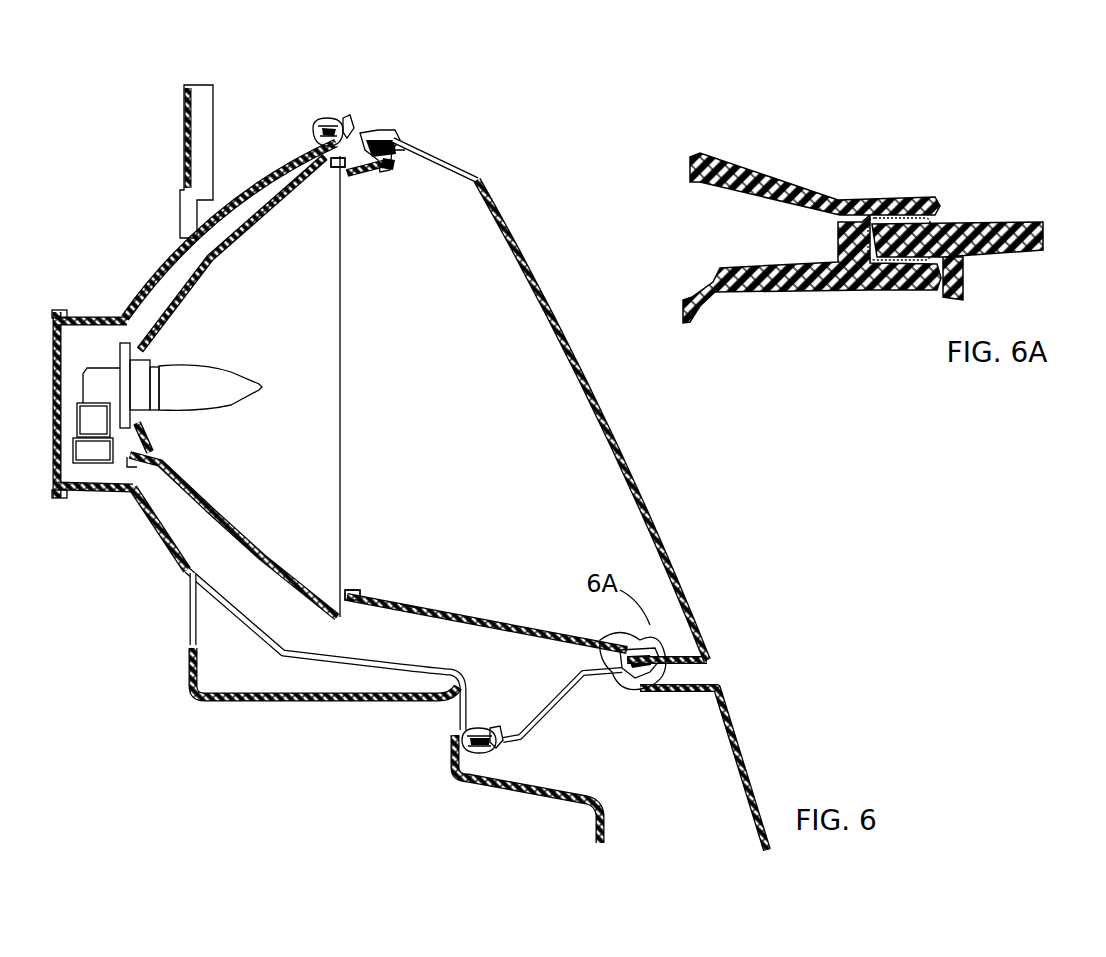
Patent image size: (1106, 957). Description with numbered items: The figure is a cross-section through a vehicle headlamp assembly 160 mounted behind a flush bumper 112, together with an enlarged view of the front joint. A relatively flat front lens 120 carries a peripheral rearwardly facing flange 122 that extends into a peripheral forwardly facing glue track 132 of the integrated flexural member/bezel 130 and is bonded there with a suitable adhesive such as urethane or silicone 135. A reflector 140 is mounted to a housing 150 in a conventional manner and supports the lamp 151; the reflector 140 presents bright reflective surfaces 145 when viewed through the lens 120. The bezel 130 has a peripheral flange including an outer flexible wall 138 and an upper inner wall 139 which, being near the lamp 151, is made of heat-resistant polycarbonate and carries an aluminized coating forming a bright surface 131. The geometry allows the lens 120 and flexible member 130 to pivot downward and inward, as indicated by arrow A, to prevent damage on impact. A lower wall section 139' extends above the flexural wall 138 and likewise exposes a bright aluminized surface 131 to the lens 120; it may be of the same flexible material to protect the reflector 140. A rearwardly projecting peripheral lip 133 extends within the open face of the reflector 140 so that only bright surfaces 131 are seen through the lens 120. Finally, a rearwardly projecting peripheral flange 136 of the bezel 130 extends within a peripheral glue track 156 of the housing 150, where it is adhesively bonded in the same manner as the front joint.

In FIG. 6, the flush bumper 112 is at (735, 712).
In FIG. 6, the front lens 120 is at (663, 503).
In FIG. 6, the rearwardly facing flange 122 is at (395, 150).
In FIG. 6A, the rearwardly facing flange 122 is at (940, 226).
In FIG. 6, the flexural member/bezel 130 is at (396, 597).
In FIG. 6, the bright surface 131 is at (358, 178).
In FIG. 6, the glue track 132 is at (377, 132).
In FIG. 6A, the glue track 132 is at (918, 296).
In FIG. 6, the peripheral lip 133 is at (335, 168).
In FIG. 6A, the bonding adhesive 135 is at (903, 213).
In FIG. 6, the rearwardly projecting peripheral flange 136 is at (348, 118).
In FIG. 6, the outer flexible wall 138 is at (540, 735).
In FIG. 6, the upper inner wall 139 is at (401, 205).
In FIG. 6, the lower wall section 139' is at (434, 628).
In FIG. 6, the reflector 140 is at (182, 305).
In FIG. 6, the bright reflective surfaces 145 is at (208, 512).
In FIG. 6, the housing 150 is at (150, 256).
In FIG. 6, the lamp 151 is at (218, 408).
In FIG. 6, the glue track 156 is at (330, 120).
In FIG. 6, the headlamp assembly 160 is at (709, 429).
In FIG. 6, the arrow A is at (492, 357).